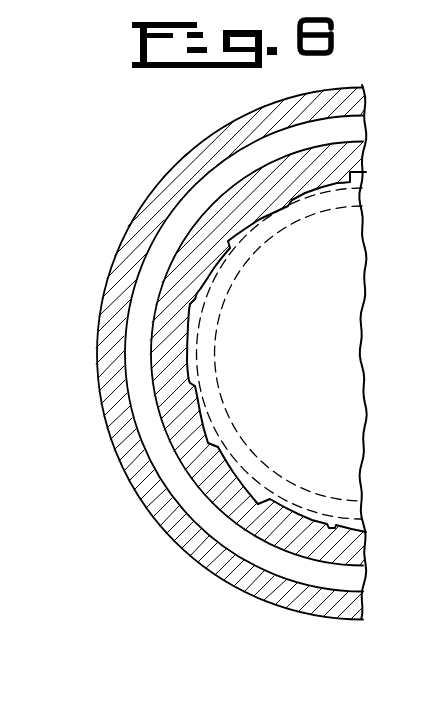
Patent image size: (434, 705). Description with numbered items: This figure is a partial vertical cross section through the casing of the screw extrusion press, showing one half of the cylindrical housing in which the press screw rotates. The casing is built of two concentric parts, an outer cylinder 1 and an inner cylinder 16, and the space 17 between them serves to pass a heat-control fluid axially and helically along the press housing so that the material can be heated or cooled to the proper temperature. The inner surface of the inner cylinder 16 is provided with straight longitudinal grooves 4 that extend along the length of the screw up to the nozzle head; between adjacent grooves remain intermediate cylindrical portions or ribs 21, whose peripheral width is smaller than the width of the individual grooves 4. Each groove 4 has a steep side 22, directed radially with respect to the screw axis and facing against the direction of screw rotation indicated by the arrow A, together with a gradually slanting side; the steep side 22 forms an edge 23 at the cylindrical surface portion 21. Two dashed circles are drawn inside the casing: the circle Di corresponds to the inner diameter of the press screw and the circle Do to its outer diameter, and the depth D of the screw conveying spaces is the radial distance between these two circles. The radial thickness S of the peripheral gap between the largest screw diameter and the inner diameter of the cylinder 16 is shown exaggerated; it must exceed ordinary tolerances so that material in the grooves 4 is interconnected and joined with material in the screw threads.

The outer cylinder 1 is at (107, 300).
The longitudinal grooves 4 is at (247, 483).
The inner cylinder 16 is at (356, 153).
The space 17 is at (350, 128).
The intermediate cylindrical portions or ribs 21 is at (229, 246).
The steep side 22 is at (200, 295).
The edge 23 is at (192, 304).
The radial thickness of peripheral gap S is at (291, 175).
The arrow indicating direction of screw rotation A is at (300, 261).
The depth of thread D is at (250, 410).
The circle of outer diameter of screw Do is at (198, 331).
The circle of inner diameter of screw Di is at (216, 372).